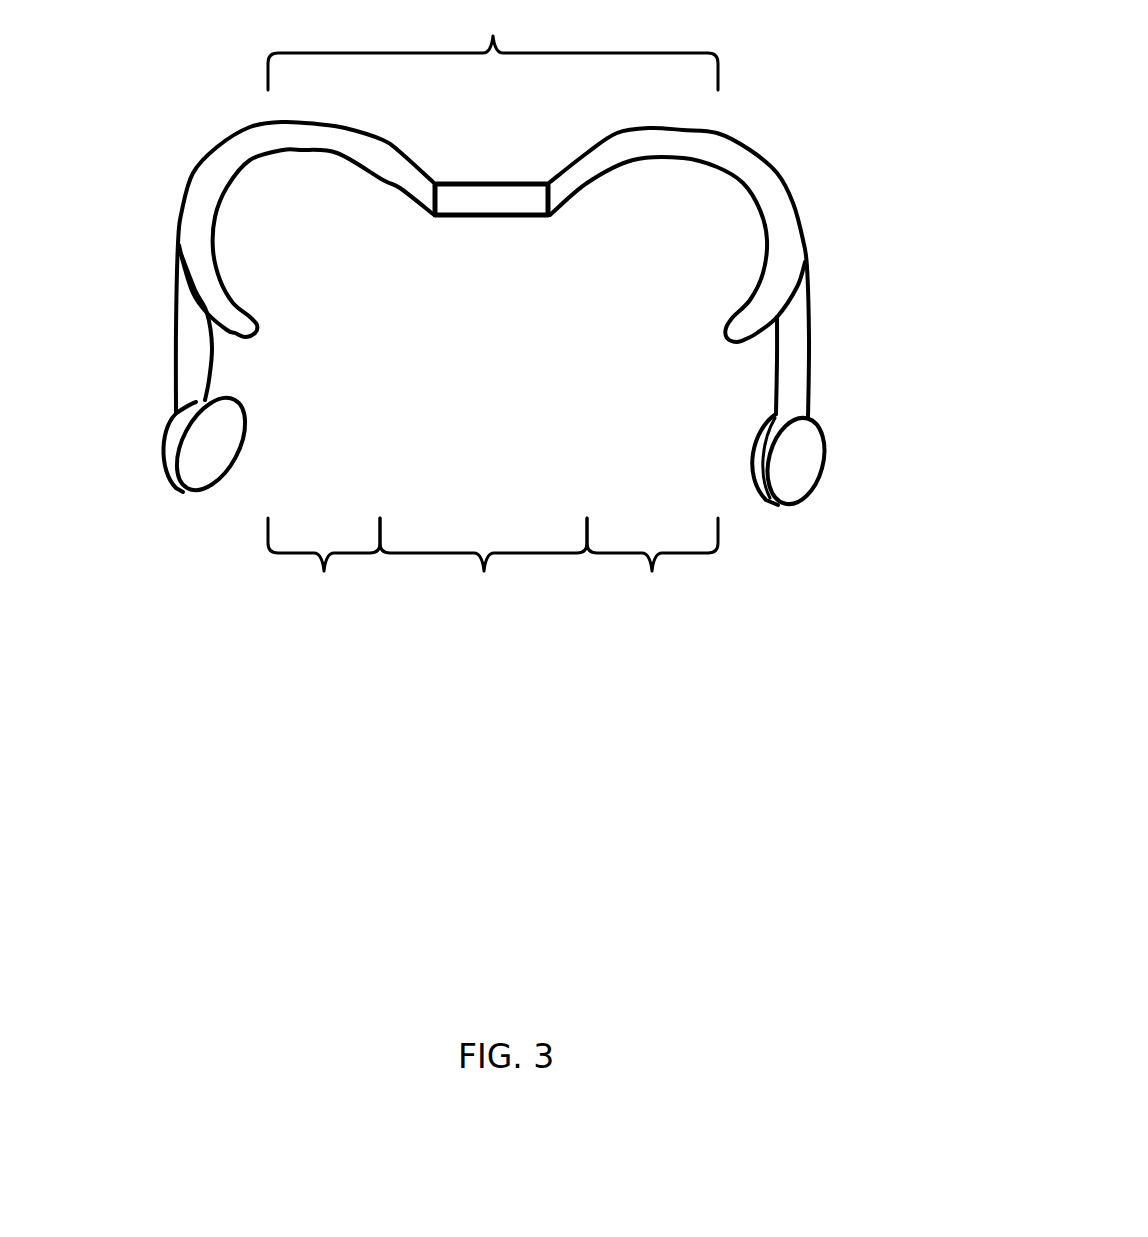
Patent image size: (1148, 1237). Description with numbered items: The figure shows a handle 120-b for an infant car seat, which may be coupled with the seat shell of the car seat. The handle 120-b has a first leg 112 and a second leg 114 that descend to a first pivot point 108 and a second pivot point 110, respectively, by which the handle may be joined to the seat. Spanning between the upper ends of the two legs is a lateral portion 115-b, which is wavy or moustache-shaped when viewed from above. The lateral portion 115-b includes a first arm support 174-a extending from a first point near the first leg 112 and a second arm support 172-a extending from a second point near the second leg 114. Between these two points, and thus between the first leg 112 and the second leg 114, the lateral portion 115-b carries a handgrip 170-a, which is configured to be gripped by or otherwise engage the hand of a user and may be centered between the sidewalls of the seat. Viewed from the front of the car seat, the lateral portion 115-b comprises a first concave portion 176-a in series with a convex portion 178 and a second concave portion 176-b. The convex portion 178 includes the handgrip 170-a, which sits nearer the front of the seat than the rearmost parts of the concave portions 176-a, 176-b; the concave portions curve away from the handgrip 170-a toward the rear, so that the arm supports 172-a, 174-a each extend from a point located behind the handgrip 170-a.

The first pivot point 108 is at (165, 440).
The second pivot point 110 is at (827, 442).
The first leg 112 is at (175, 305).
The second leg 114 is at (810, 332).
The lateral portion 115-b is at (493, 46).
The handle 120-b is at (780, 975).
The handgrip 170-a is at (528, 184).
The second arm support 172-a is at (788, 182).
The first arm support 174-a is at (212, 162).
The first concave portion 176-a is at (324, 563).
The second concave portion 176-b is at (652, 563).
The convex portion 178 is at (483, 563).